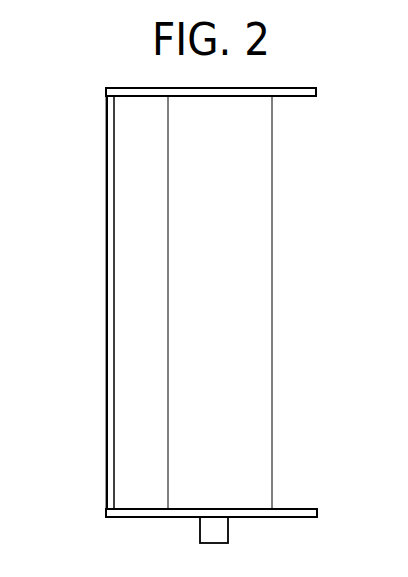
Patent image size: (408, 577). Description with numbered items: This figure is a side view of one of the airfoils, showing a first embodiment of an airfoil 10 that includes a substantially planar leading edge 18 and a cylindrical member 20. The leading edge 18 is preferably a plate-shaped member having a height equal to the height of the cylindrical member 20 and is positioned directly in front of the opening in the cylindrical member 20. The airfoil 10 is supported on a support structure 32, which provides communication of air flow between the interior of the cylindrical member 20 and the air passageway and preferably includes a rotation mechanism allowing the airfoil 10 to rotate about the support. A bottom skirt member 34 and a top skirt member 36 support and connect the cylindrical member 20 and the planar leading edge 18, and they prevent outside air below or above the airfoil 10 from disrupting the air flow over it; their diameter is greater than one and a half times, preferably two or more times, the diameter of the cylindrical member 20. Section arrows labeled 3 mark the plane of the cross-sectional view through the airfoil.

The airfoil 10 is at (306, 58).
The leading edge 18 is at (106, 242).
The cylindrical member 20 is at (252, 232).
The support structure 32 is at (122, 538).
The bottom skirt member 34 is at (287, 508).
The top skirt member 36 is at (290, 97).
The section line 3- 3 is at (189, 308).